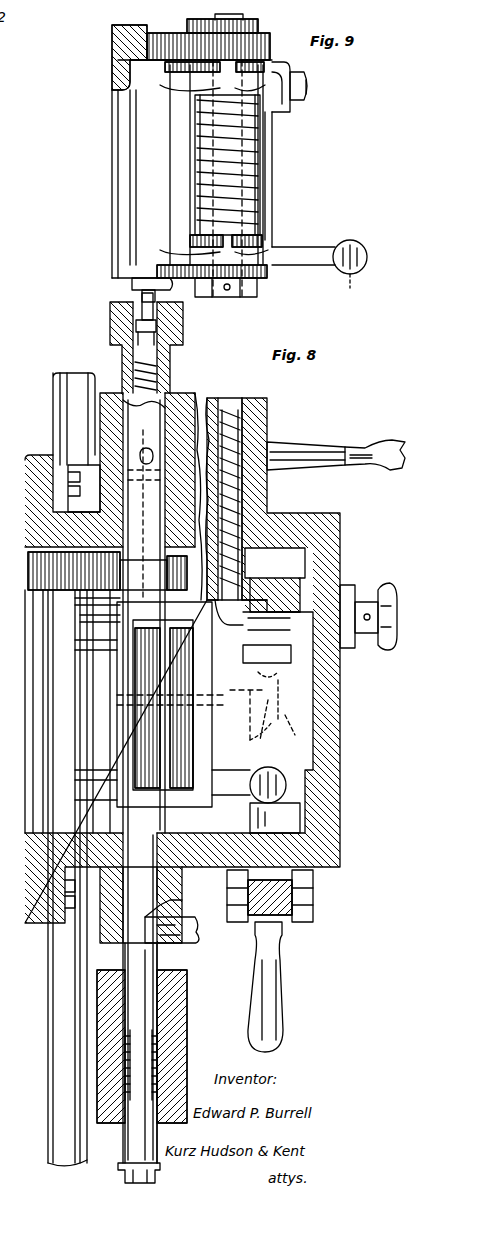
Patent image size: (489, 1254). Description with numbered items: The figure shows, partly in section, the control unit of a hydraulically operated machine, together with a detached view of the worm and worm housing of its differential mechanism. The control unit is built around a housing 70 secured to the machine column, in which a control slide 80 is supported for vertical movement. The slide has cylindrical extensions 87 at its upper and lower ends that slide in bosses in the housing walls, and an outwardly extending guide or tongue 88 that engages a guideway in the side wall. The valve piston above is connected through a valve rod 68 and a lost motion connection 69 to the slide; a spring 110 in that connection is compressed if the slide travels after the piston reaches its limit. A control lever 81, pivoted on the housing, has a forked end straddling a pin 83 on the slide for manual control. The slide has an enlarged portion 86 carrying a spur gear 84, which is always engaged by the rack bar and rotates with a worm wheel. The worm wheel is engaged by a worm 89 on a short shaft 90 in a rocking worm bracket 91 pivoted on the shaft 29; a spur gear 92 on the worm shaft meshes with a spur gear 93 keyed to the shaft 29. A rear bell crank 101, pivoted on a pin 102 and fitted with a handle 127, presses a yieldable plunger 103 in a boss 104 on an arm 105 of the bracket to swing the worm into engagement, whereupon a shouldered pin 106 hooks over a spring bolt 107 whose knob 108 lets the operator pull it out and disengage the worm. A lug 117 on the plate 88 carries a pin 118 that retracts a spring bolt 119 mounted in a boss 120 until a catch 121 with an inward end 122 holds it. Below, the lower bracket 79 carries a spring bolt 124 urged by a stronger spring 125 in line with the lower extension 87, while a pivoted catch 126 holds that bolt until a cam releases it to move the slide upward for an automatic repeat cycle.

In FIG. 9, the shaft 29 is at (132, 284).
In FIG. 8, the shaft 29 is at (53, 402).
In FIG. 9, the valve rod 68 is at (142, 296).
In FIG. 8, the valve rod 68 is at (113, 301).
In FIG. 8, the lost motion connection 69 is at (160, 343).
In FIG. 8, the housing 70 is at (0, 466).
In FIG. 8, the lower bracket 79 is at (182, 994).
In FIG. 8, the control slide 80 is at (122, 360).
In FIG. 8, the control lever 81 is at (298, 445).
In FIG. 8, the pin 83 is at (144, 515).
In FIG. 8, the spur gear 84 is at (193, 738).
In FIG. 8, the enlarged portion 86 is at (190, 790).
In FIG. 8, the cylindrical extensions 87 is at (144, 778).
In FIG. 8, the guide or tongue 88 is at (279, 720).
In FIG. 9, the worm 89 is at (248, 160).
In FIG. 9, the short shaft 90 is at (230, 297).
In FIG. 9, the rocking worm bracket 91 is at (274, 118).
In FIG. 8, the rocking worm bracket 91 is at (52, 727).
In FIG. 9, the spur gear 92 is at (262, 46).
In FIG. 8, the spur gear 92 is at (198, 571).
In FIG. 9, the spur gear 93 is at (118, 42).
In FIG. 8, the spur gear 93 is at (35, 555).
In FIG. 8, the rear bell crank 101 is at (262, 820).
In FIG. 8, the pin 102 is at (313, 903).
In FIG. 9, the yieldable plunger 103 is at (355, 285).
In FIG. 9, the boss 104 is at (356, 243).
In FIG. 8, the boss 104 is at (272, 768).
In FIG. 9, the arm 105 is at (312, 250).
In FIG. 8, the arm 105 is at (233, 776).
In FIG. 9, the shouldered pin 106 is at (310, 82).
In FIG. 8, the spring bolt 107 is at (60, 605).
In FIG. 8, the knob 108 is at (385, 585).
In FIG. 8, the spring 110 is at (158, 370).
In FIG. 8, the lug 117 is at (267, 720).
In FIG. 8, the pin 118 is at (257, 710).
In FIG. 8, the spring bolt 119 is at (216, 582).
In FIG. 8, the boss 120 is at (267, 418).
In FIG. 8, the catch 121 is at (283, 600).
In FIG. 8, the inward end 122 is at (243, 640).
In FIG. 8, the spring bolt 124 is at (158, 966).
In FIG. 8, the spring 125 is at (182, 1048).
In FIG. 8, the pivoted catch 126 is at (185, 932).
In FIG. 8, the handle 127 is at (272, 1003).